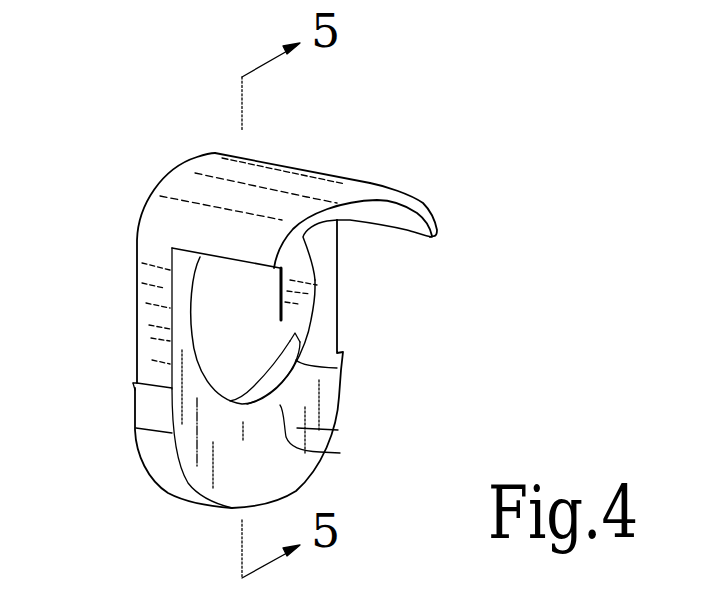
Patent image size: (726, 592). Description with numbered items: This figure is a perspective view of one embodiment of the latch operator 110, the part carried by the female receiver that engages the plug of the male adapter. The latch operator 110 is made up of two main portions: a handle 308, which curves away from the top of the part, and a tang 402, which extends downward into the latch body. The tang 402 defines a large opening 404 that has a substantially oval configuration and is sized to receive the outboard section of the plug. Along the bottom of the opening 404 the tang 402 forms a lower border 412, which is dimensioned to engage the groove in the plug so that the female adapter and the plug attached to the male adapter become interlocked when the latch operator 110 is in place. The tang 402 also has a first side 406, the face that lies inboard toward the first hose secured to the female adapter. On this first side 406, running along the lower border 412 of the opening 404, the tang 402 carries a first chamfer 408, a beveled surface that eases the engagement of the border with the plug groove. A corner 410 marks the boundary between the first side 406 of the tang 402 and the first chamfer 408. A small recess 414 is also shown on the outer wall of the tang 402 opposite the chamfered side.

The latch operator 110 is at (460, 361).
The handle 308 is at (407, 192).
The tang 402 is at (292, 460).
The opening 404 is at (257, 303).
The first side 406 is at (339, 428).
The first chamfer 408 is at (343, 369).
The corner 410 is at (322, 453).
The lower border 412 is at (268, 366).
The recess 414 is at (135, 389).